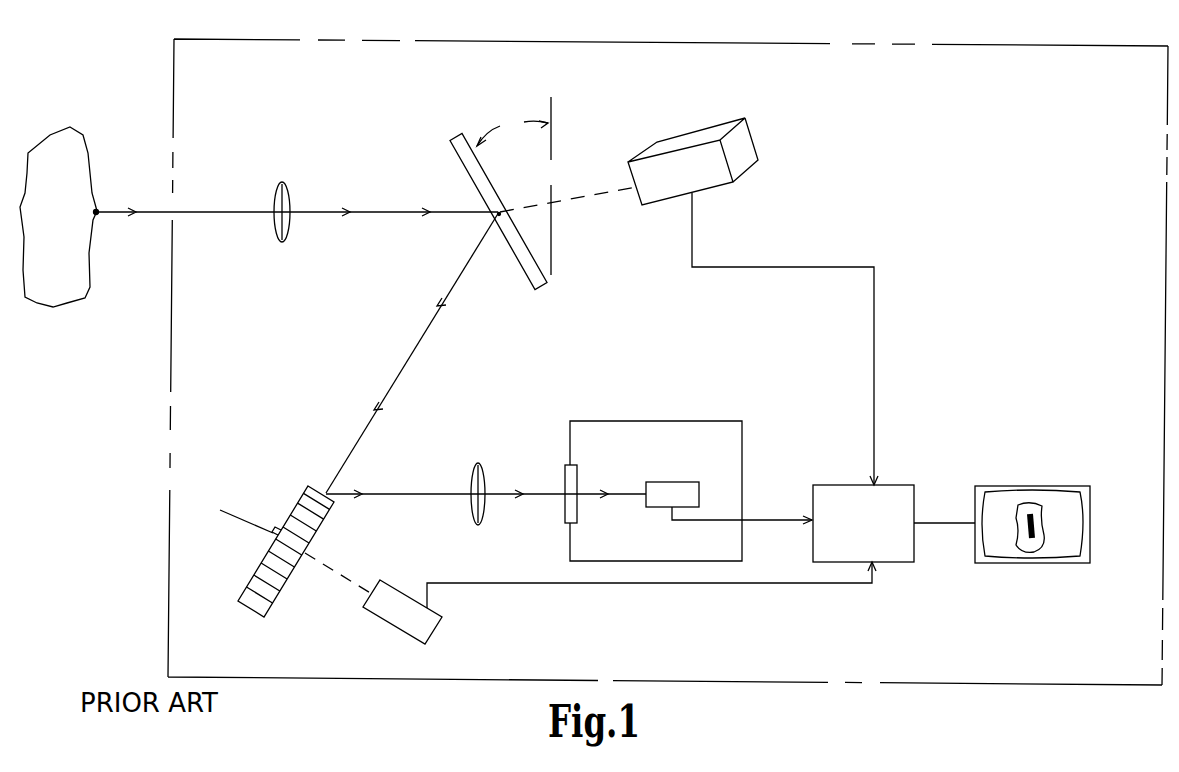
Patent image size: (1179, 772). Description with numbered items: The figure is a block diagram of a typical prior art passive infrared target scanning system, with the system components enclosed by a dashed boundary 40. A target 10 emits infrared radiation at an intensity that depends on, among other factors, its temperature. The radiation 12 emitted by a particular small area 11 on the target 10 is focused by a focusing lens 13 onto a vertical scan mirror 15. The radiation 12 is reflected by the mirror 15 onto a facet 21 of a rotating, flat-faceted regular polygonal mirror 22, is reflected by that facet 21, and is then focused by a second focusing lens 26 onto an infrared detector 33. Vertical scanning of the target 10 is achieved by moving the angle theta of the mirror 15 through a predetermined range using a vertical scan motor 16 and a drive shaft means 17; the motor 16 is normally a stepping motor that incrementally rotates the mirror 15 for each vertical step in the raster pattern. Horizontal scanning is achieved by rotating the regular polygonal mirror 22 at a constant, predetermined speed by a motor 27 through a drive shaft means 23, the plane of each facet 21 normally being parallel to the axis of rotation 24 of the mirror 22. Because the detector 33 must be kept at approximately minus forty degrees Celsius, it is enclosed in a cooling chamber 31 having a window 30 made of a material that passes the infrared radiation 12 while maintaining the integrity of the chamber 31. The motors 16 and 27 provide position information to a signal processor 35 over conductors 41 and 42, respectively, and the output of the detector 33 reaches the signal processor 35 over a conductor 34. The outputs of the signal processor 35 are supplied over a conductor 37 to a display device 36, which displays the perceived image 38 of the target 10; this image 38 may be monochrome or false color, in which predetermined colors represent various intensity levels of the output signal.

The target 10 is at (81, 100).
The small area on the target 11 is at (104, 197).
The radiation 12 is at (160, 188).
The focusing lens 13 is at (290, 200).
The vertical scan mirror 15 is at (441, 157).
The vertical scan motor 16 is at (710, 133).
The drive shaft means 17 is at (573, 198).
The facet 21 is at (325, 474).
The rotating flat-faceted regular polygonal mirror 22 is at (248, 572).
The drive shaft means 23 is at (318, 564).
The axis of rotation 24 is at (238, 515).
The focusing lens 26 is at (486, 473).
The motor 27 is at (405, 633).
The window 30 is at (564, 504).
The cooling chamber 31 is at (604, 420).
The infrared detector 33 is at (675, 482).
The conductor 34 is at (712, 522).
The signal processor 35 is at (833, 485).
The display device 36 is at (1005, 486).
The conductor 37 is at (960, 521).
The image 38 is at (1052, 531).
The system enclosure 40 is at (171, 410).
The conductor 41 is at (797, 266).
The conductor 42 is at (793, 585).